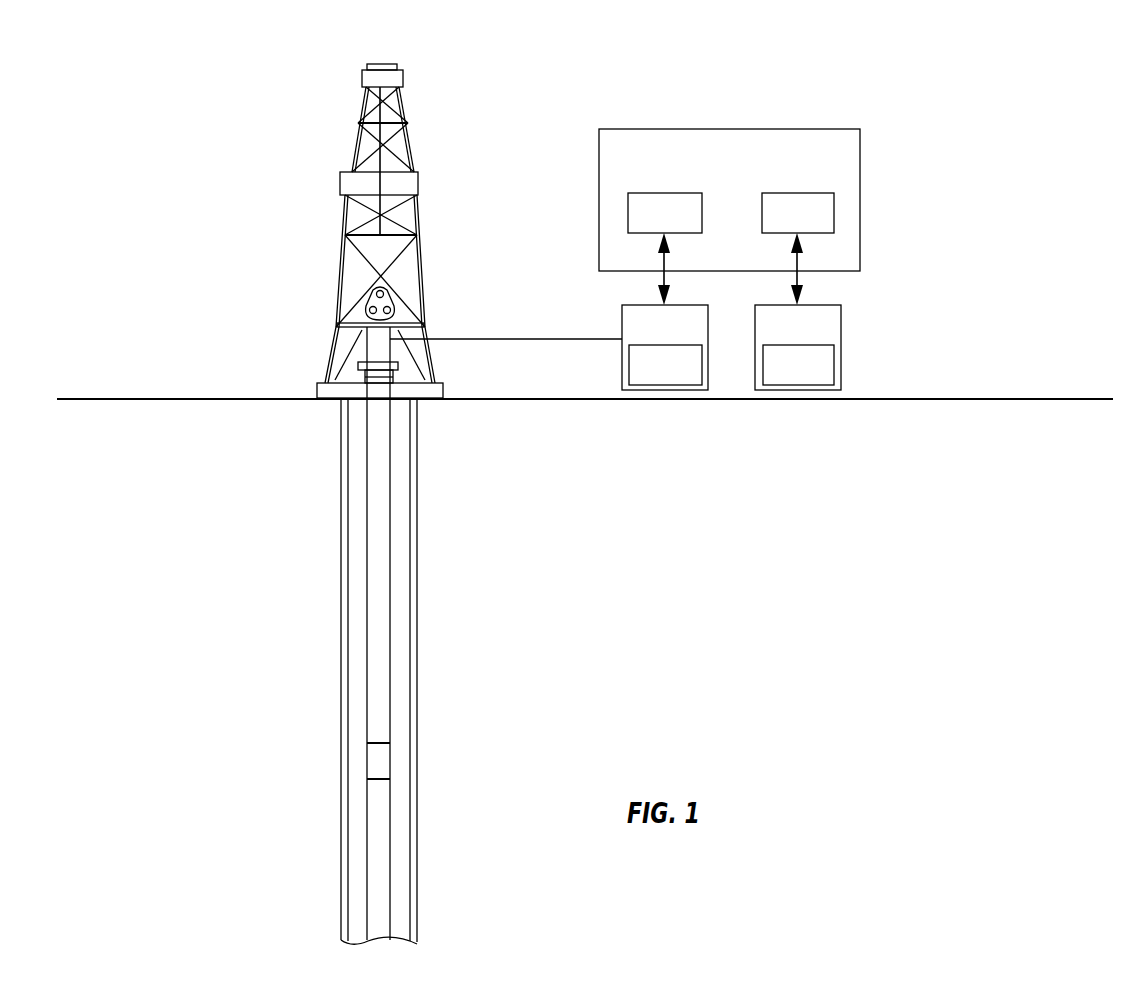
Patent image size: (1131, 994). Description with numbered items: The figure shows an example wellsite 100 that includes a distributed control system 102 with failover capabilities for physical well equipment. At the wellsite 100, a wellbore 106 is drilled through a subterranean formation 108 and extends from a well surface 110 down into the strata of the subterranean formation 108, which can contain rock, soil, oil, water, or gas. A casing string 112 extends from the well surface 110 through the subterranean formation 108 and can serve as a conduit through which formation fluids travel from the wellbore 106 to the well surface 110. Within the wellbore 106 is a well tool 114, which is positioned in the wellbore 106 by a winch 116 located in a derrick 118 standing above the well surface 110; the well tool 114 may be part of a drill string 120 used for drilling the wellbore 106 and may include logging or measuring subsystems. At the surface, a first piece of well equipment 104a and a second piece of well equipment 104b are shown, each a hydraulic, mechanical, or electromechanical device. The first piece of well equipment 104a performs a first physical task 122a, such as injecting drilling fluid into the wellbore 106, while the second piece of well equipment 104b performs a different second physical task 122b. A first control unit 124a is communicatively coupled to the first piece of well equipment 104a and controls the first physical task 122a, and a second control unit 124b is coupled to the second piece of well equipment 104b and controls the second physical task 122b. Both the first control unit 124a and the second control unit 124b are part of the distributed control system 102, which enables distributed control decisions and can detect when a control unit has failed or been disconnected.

The wellsite 100 is at (215, 110).
The distributed control system 102 is at (725, 166).
The first piece of well equipment 104a is at (616, 347).
The second piece of well equipment 104b is at (845, 350).
The wellbore 106 is at (340, 465).
The subterranean formation 108 is at (185, 647).
The well surface 110 is at (1040, 397).
The casing string 112 is at (341, 592).
The well tool 114 is at (372, 765).
The winch 116 is at (368, 307).
The derrick 118 is at (418, 222).
The drill string 120 is at (383, 472).
The first physical task 122a is at (629, 357).
The second physical task 122b is at (834, 355).
The first control unit 124a is at (628, 215).
The second control unit 124b is at (826, 218).